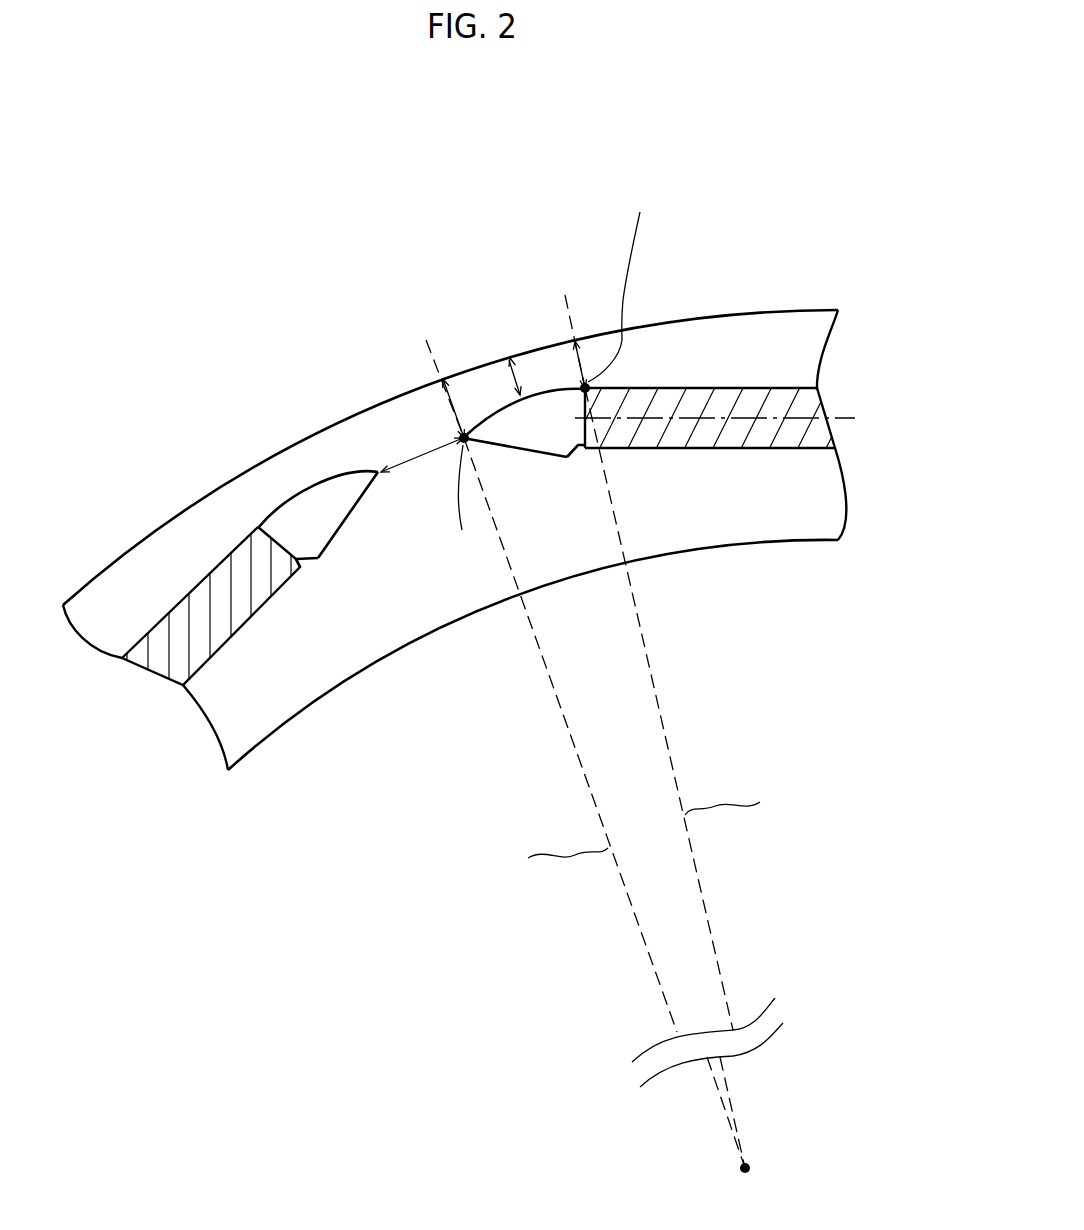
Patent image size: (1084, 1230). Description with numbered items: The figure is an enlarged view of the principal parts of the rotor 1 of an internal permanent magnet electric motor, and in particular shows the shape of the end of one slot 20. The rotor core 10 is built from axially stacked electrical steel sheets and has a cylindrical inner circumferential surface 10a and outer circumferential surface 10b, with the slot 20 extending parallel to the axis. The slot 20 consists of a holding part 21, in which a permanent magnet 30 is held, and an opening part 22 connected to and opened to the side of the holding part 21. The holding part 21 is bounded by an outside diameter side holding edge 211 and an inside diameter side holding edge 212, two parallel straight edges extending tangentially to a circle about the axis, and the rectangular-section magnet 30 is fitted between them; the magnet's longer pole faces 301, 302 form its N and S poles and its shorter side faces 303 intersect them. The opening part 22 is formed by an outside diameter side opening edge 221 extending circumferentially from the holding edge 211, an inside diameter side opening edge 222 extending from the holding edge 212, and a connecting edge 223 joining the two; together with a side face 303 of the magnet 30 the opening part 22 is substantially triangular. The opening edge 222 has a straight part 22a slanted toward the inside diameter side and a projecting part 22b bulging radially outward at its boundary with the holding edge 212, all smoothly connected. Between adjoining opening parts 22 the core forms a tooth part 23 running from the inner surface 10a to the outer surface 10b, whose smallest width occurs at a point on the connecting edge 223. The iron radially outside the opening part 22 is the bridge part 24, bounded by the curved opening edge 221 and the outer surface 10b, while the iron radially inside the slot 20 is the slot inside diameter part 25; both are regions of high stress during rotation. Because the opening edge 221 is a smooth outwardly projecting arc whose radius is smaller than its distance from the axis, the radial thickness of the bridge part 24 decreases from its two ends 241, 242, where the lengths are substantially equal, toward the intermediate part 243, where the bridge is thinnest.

The rotor 1 is at (807, 123).
The rotor core 10 is at (475, 497).
The inner circumferential surface 10a is at (455, 621).
The outer circumferential surface 10b is at (788, 310).
The slot 20 is at (247, 513).
The holding part 21 is at (230, 552).
The opening part 22 is at (401, 461).
The straight part 22a is at (347, 530).
The projecting part 22b is at (300, 561).
The tooth part 23 is at (398, 425).
The bridge part 24 is at (341, 448).
The slot inside diameter part 25 is at (258, 717).
The permanent magnet 30 is at (465, 413).
The outside diameter side holding edge 211 is at (670, 392).
The inside diameter side holding edge 212 is at (723, 437).
The outside diameter side opening edge 221 is at (465, 420).
The inside diameter side opening edge 222 is at (523, 453).
The connecting edge 223 is at (382, 474).
The end of bridge part 241 is at (450, 402).
The end of bridge part 242 is at (588, 362).
The intermediate part 243 is at (508, 382).
The pole face 301 is at (755, 388).
The pole face 302 is at (757, 450).
The side face 303 is at (585, 412).